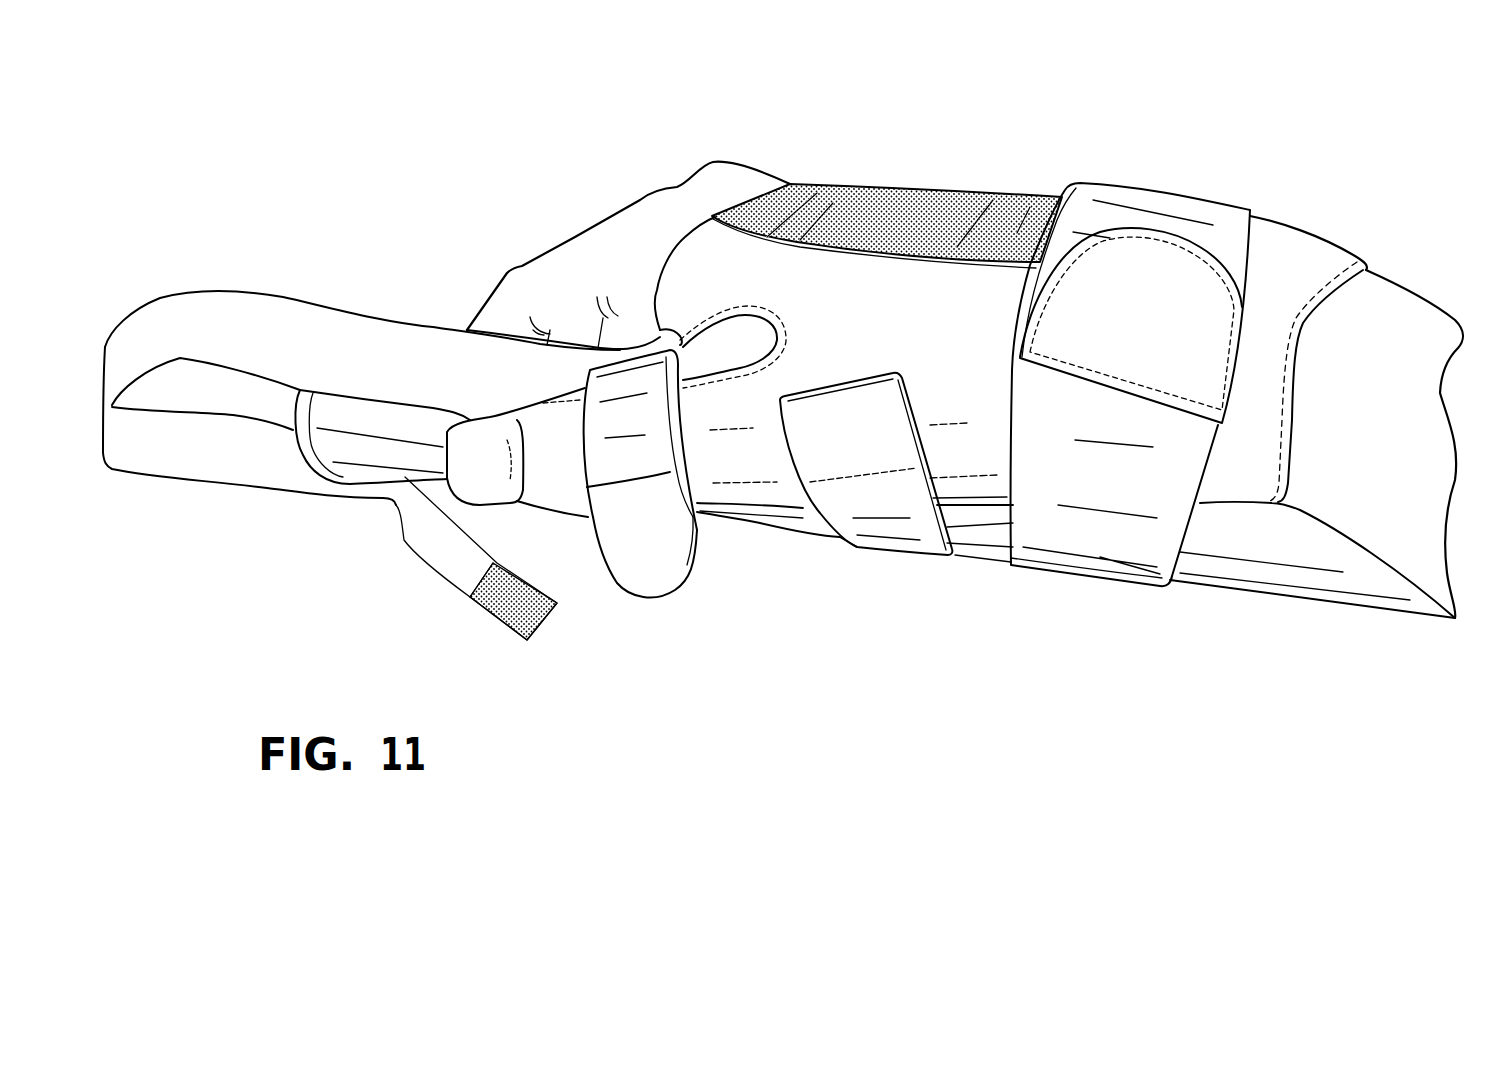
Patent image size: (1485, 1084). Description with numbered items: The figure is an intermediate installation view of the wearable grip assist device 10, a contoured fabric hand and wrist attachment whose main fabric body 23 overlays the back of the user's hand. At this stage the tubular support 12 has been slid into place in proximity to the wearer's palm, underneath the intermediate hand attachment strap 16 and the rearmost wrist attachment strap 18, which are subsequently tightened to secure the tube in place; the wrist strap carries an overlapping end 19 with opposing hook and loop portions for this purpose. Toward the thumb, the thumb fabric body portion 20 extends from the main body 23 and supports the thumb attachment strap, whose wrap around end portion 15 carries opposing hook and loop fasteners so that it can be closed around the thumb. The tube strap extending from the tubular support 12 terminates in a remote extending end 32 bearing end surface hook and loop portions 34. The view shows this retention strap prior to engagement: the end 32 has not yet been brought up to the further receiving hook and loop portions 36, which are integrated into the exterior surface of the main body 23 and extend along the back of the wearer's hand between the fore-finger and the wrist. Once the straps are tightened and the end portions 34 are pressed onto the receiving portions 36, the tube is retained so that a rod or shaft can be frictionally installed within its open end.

The wearable grip assist device 10 is at (802, 597).
The tubular support 12 is at (376, 432).
The wrap around end portion 15 is at (642, 572).
The intermediate hand attachment strap 16 is at (897, 535).
The wrist attachment strap 18 is at (1100, 555).
The overlapping end 19 is at (1165, 260).
The thumb fabric body portion 20 is at (557, 497).
The main fabric body 23 is at (854, 320).
The remote extending end 32 is at (288, 466).
The hook and loop portions 34 is at (498, 614).
The receiving hook and loop portions 36 is at (938, 197).